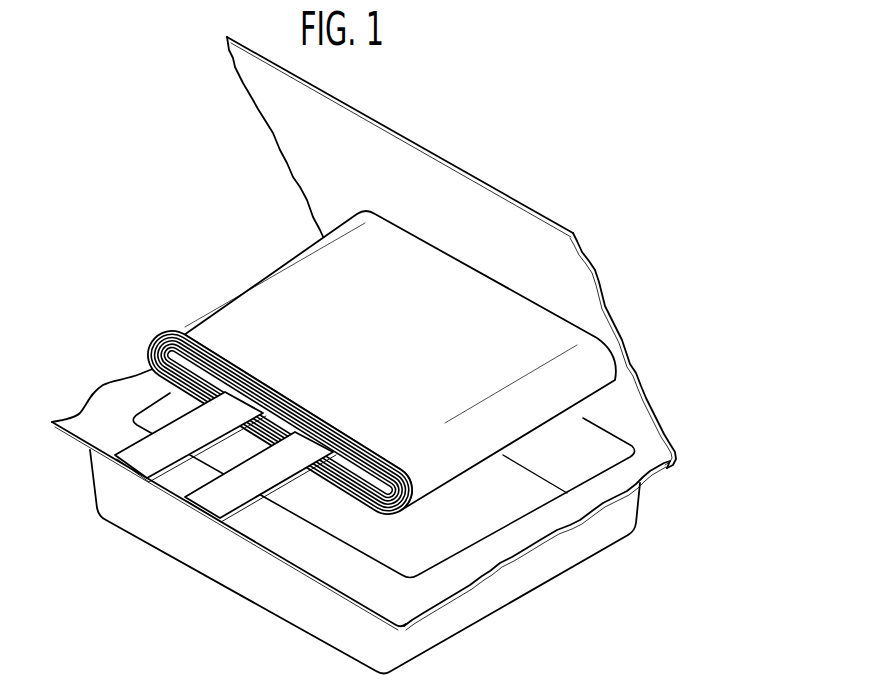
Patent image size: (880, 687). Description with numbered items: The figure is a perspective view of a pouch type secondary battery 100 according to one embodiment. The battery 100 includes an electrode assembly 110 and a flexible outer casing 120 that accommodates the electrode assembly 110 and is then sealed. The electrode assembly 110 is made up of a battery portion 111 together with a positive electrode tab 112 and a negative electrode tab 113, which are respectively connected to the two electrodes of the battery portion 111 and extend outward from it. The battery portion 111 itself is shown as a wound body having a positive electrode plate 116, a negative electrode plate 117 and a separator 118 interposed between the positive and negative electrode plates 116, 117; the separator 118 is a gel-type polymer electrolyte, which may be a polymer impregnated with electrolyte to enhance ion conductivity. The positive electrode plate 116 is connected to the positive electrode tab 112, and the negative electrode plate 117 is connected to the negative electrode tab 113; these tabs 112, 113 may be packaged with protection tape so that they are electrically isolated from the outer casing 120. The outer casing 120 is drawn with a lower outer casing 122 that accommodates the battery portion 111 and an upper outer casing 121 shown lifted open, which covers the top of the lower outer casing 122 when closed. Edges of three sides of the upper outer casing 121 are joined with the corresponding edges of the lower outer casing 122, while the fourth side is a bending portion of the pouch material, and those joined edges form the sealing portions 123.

The pouch type secondary battery 100 is at (406, 362).
The electrode assembly 110 is at (316, 340).
The battery portion 111 is at (214, 392).
The positive electrode plate 116 is at (153, 340).
The separator 118 is at (157, 353).
The negative electrode plate 117 is at (157, 363).
The positive electrode tab 112 is at (213, 506).
The negative electrode tab 113 is at (138, 467).
The flexible outer casing 120 is at (424, 362).
The upper outer casing 121 is at (673, 433).
The lower outer casing 122 is at (643, 477).
The sealing portion 123 is at (348, 574).